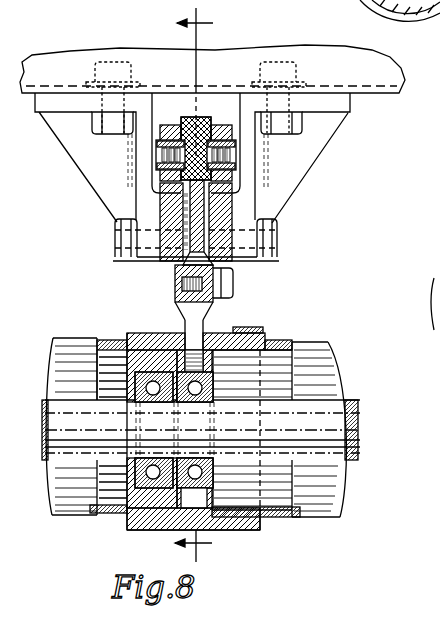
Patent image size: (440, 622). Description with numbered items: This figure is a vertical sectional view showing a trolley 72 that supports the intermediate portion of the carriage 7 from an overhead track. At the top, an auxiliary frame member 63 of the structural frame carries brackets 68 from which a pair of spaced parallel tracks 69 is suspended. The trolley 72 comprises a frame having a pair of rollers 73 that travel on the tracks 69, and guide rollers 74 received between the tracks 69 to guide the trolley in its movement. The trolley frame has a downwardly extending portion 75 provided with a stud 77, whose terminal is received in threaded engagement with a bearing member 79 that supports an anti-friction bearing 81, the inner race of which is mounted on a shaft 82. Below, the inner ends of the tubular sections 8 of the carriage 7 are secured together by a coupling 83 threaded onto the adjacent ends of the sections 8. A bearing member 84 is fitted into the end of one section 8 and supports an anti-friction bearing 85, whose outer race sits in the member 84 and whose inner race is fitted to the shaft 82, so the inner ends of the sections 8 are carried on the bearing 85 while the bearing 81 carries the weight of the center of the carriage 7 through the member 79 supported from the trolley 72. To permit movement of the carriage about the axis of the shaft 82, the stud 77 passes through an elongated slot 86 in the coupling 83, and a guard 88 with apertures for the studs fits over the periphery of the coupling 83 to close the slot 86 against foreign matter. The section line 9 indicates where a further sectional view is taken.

The carriage 7 is at (340, 343).
The tubular sections 8 is at (70, 517).
The section line 9 is at (194, 281).
The auxiliary frame member 63 is at (388, 73).
The brackets 68 is at (77, 165).
The tracks 69 is at (166, 262).
The trolley 72 is at (201, 119).
The rollers 73 is at (168, 124).
The guide rollers 74 is at (258, 198).
The downwardly extending portion 75 is at (188, 253).
The stud 77 is at (184, 323).
The bearing member 79 is at (222, 508).
The anti-friction bearing 81 is at (213, 480).
The shaft 82 is at (353, 418).
The coupling 83 is at (217, 531).
The bearing member 84 is at (112, 487).
The anti-friction bearing 85 is at (125, 477).
The slot 86 is at (231, 333).
The guard 88 is at (240, 330).